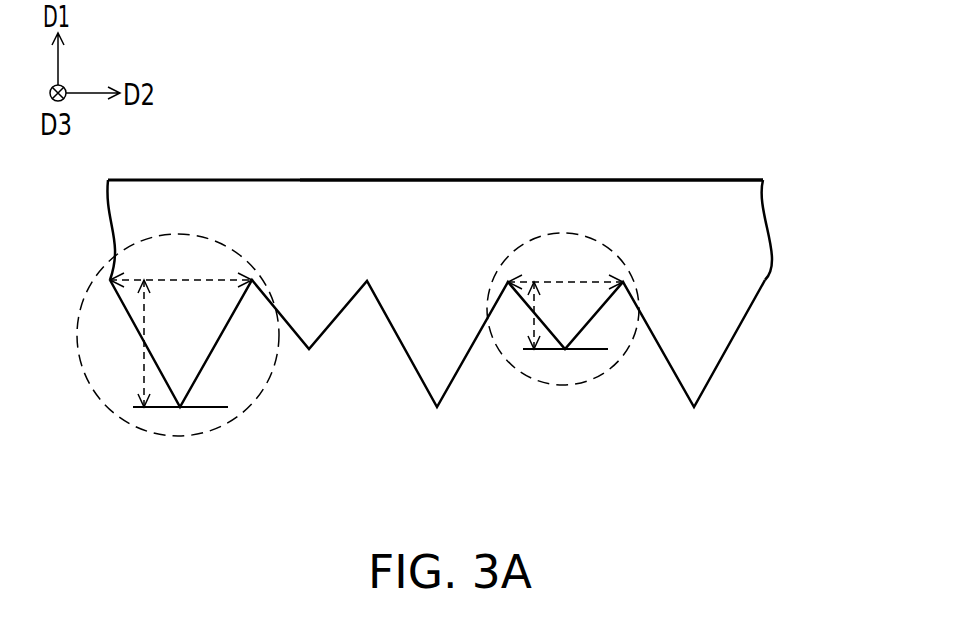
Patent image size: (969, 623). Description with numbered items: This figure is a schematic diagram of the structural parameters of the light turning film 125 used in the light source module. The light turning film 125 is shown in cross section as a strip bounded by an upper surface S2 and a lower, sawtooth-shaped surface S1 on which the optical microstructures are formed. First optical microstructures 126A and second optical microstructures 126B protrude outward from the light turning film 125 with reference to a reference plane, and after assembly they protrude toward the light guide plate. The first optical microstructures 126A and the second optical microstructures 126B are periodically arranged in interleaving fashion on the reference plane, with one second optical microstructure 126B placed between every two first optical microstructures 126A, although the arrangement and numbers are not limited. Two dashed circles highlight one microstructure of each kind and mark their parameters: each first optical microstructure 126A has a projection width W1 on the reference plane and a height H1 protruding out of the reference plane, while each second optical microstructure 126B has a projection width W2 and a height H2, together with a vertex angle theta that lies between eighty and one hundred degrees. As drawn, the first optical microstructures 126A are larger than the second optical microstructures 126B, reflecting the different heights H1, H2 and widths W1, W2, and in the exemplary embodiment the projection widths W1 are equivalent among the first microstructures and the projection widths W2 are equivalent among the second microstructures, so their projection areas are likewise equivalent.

The light turning film 125 is at (743, 245).
The first surface (microstructured surface) S1 is at (741, 329).
The second surface S2 is at (753, 166).
The first optical microstructures 126A is at (192, 365).
The second optical microstructures 126B is at (567, 349).
The projection width of first optical microstructure W1 is at (181, 264).
The height of first optical microstructure H1 is at (131, 343).
The projection width of second optical microstructure W2 is at (565, 266).
The height of second optical microstructure H2 is at (522, 315).